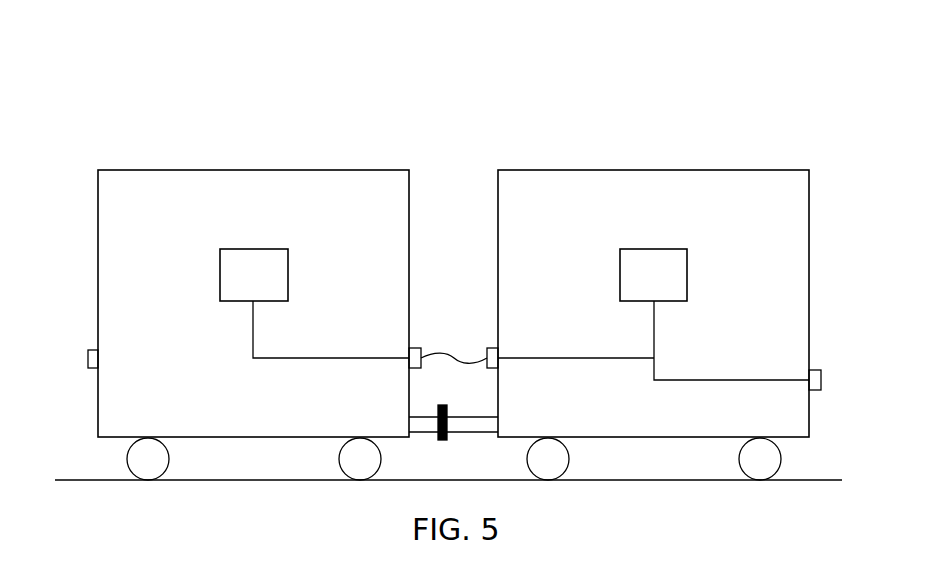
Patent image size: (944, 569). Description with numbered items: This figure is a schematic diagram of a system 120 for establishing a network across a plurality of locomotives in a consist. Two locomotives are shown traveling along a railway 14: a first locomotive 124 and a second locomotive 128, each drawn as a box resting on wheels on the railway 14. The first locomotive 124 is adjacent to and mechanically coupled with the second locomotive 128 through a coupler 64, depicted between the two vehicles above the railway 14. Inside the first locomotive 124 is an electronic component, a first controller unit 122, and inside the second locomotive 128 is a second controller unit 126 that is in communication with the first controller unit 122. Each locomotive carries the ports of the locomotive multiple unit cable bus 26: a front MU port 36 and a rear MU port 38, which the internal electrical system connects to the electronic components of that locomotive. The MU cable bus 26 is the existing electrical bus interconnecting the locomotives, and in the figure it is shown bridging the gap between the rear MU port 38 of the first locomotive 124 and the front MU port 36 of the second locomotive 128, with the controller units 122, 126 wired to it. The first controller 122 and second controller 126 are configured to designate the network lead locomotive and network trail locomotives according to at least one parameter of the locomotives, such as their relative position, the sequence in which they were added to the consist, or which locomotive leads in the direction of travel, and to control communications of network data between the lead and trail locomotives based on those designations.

The system 120 is at (268, 74).
The first locomotive 124 is at (178, 150).
The second locomotive 128 is at (551, 155).
The first controller unit 122 is at (247, 249).
The second controller unit 126 is at (657, 249).
The front MU port 36 is at (88, 356).
The rear MU port 38 is at (414, 348).
The MU cable bus 26 is at (454, 336).
The coupler 64 is at (473, 424).
The railway 14 is at (90, 480).